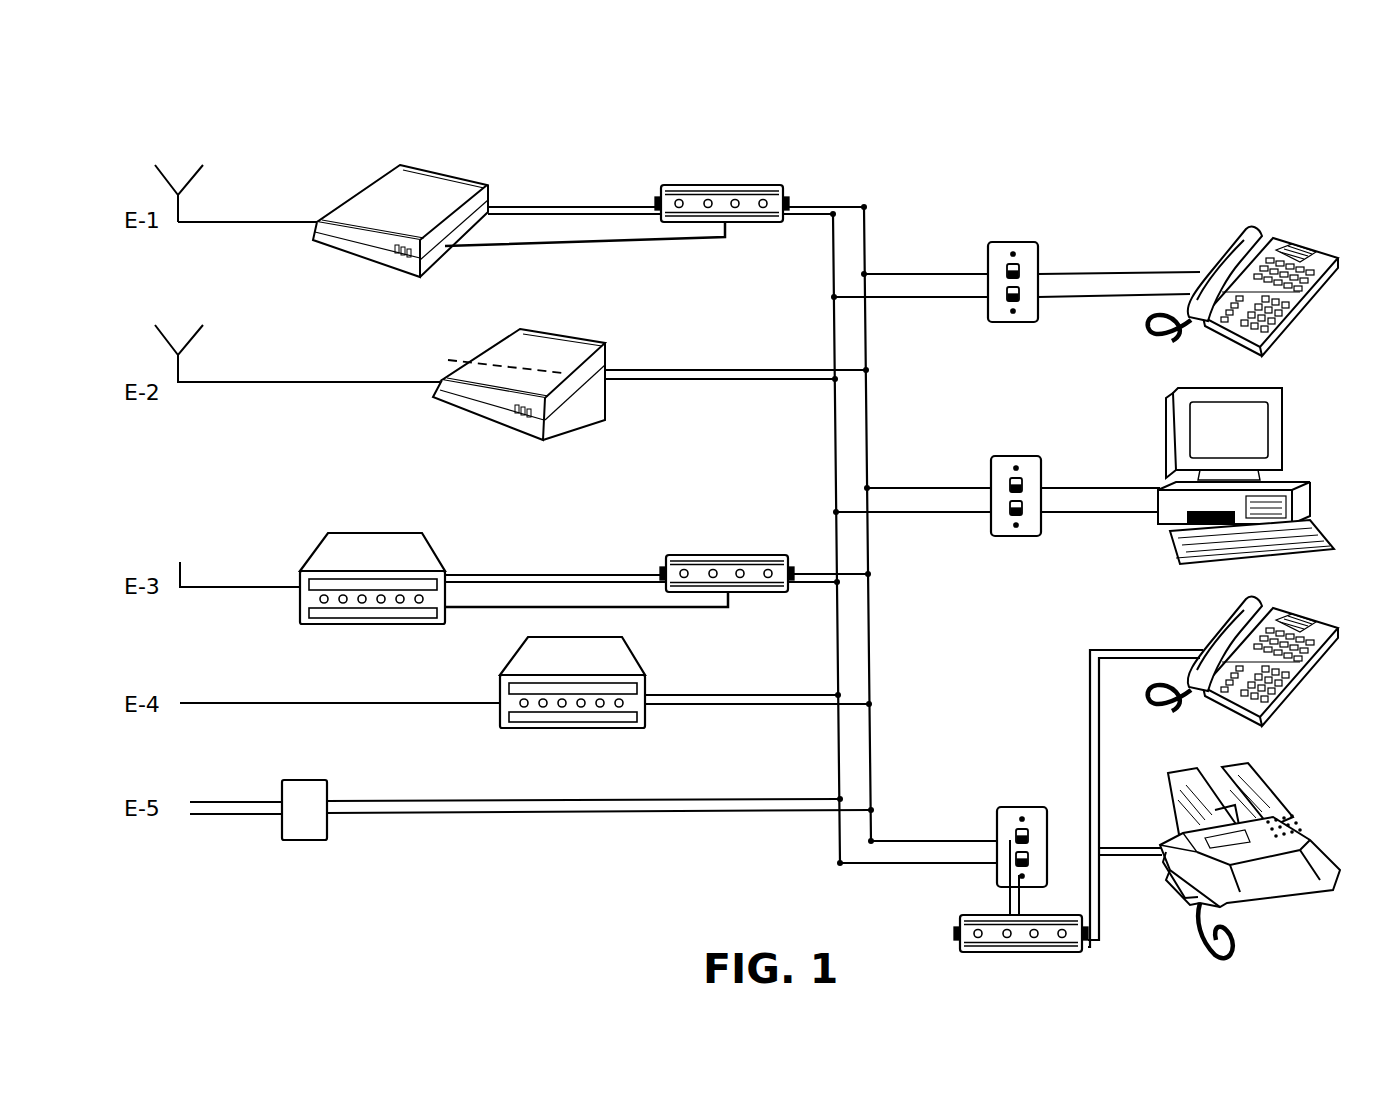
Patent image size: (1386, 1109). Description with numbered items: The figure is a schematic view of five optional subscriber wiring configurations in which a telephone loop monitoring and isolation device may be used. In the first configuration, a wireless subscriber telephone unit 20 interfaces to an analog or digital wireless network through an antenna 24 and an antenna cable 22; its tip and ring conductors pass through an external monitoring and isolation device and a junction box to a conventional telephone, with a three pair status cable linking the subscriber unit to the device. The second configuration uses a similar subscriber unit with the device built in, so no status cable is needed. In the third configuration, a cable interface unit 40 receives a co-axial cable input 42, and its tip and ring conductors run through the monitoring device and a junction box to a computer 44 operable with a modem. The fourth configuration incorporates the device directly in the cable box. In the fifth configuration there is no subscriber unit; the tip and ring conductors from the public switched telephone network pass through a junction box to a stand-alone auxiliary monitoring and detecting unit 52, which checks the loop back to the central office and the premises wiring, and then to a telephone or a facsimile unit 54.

The wireless subscriber telephone unit 20 is at (322, 222).
The antenna cable 22 is at (228, 221).
The antenna 24 is at (158, 177).
The cable interface unit 40 is at (376, 533).
The co-axial cable input 42 is at (252, 586).
The computer 44 is at (1168, 450).
The auxiliary monitoring and detecting unit 52 is at (960, 914).
The facsimile unit 54 is at (1290, 820).